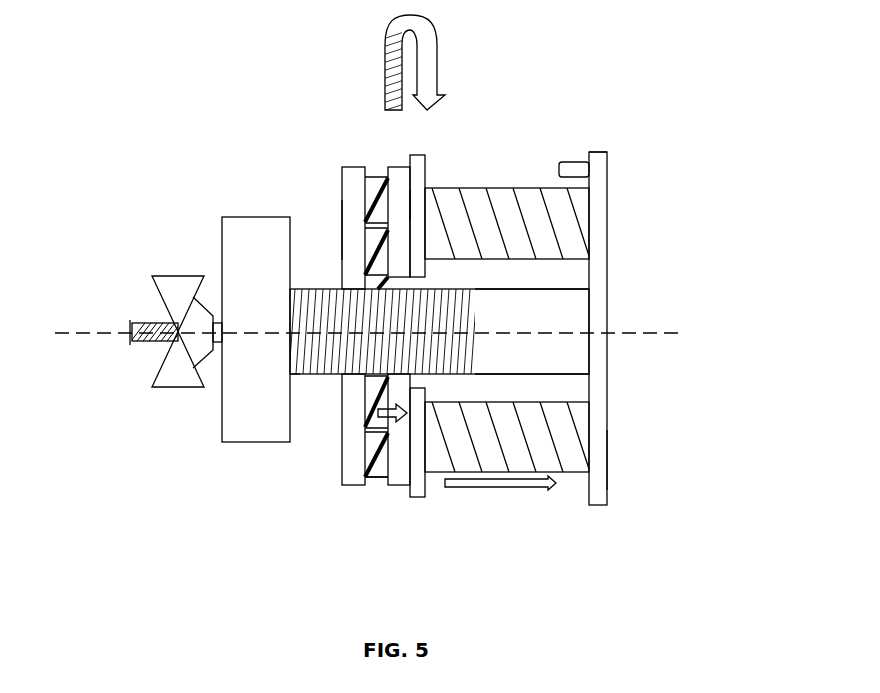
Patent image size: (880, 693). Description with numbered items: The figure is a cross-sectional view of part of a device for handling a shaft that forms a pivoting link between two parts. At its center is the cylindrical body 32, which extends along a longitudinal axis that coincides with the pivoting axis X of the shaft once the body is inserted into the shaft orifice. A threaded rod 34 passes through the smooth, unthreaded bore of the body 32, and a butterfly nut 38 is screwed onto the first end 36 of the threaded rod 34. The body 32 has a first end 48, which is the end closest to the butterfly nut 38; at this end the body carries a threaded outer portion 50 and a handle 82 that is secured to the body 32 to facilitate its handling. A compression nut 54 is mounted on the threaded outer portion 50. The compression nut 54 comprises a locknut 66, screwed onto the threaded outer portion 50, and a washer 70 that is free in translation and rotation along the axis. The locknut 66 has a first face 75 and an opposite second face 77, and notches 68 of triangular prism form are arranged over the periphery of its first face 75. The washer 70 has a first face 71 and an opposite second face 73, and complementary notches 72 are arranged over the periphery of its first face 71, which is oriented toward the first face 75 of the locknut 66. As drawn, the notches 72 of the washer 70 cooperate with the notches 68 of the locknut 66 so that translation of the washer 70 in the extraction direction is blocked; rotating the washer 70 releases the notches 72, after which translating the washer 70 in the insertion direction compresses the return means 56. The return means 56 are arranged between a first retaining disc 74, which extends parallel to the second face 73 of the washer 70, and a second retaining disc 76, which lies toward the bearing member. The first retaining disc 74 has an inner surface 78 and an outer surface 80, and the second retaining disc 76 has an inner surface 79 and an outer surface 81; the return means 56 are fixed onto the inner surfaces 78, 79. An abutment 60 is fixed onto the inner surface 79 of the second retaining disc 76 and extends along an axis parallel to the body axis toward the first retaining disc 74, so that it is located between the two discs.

The body 32 is at (572, 317).
The threaded rod 34 is at (122, 340).
The first end of the threaded rod 36 is at (128, 325).
The butterfly nut 38 is at (175, 283).
The first end of the body 48 is at (296, 380).
The threaded outer portion 50 is at (332, 307).
The compression nut 54 is at (328, 117).
The return means 56 is at (508, 437).
The abutment 60 is at (577, 170).
The locknut 66 is at (348, 195).
The notches of the locknut 68 is at (370, 390).
The washer 70 is at (400, 468).
The first face of the washer 71 is at (388, 176).
The notches of the washer 72 is at (384, 468).
The second face of the washer 73 is at (414, 204).
The first retaining disc 74 is at (425, 166).
The first face of the locknut 75 is at (370, 457).
The second retaining disc 76 is at (604, 178).
The second face of the locknut 77 is at (340, 236).
The inner surface of the first retaining disc 78 is at (428, 491).
The inner surface of the second retaining disc 79 is at (586, 150).
The outer surface of the first retaining disc 80 is at (408, 161).
The outer surface of the second retaining disc 81 is at (608, 463).
The handle 82 is at (257, 240).
The pivoting axis X is at (391, 333).